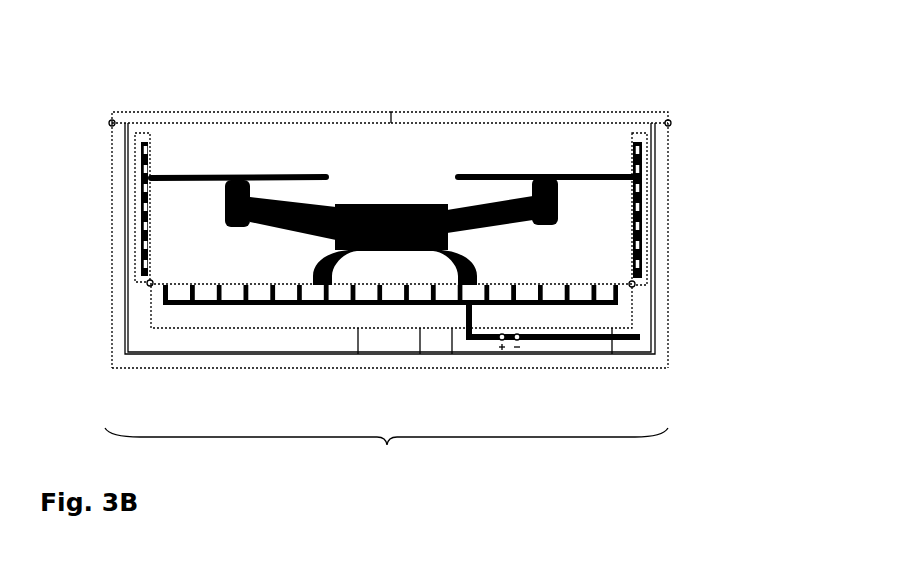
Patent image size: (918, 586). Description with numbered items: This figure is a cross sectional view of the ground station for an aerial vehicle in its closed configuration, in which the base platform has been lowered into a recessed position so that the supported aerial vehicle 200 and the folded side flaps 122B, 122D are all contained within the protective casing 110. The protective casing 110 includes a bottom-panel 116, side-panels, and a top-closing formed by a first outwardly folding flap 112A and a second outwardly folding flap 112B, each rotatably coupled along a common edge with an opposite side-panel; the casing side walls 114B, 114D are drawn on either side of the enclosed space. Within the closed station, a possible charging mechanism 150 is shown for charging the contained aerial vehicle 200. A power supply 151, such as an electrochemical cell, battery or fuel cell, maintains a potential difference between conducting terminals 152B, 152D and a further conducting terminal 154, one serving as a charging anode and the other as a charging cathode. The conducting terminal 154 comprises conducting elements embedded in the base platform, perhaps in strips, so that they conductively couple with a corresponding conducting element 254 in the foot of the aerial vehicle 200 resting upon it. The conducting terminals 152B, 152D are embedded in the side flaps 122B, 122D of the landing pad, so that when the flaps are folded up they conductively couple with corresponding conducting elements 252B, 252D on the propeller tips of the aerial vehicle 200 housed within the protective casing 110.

The protective casing 110 is at (427, 244).
The first outwardly folding flap 112A is at (251, 82).
The second outwardly folding flap 112B is at (529, 79).
The side wall 114B is at (582, 238).
The side wall 114D is at (205, 238).
The bottom-panel 116 is at (440, 380).
The side flap 122B is at (663, 159).
The side flap 122D is at (120, 158).
The charging mechanism 150 is at (386, 380).
The power supply 151 is at (499, 365).
The conducting terminal 152B is at (523, 353).
The conducting terminal 152D is at (250, 352).
The conducting terminal 154 is at (390, 355).
The aerial vehicle 200 is at (391, 193).
The conducting element 252B is at (546, 156).
The conducting element 252D is at (238, 156).
The conducting element 254 is at (364, 267).